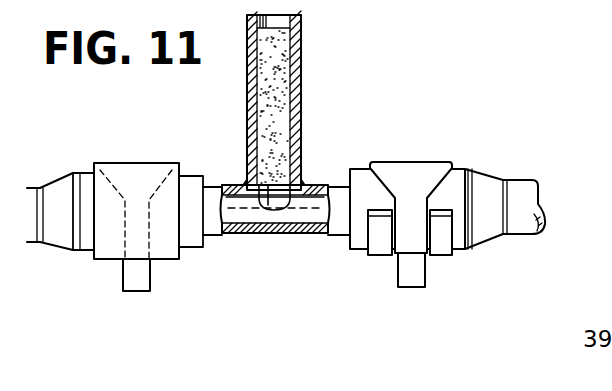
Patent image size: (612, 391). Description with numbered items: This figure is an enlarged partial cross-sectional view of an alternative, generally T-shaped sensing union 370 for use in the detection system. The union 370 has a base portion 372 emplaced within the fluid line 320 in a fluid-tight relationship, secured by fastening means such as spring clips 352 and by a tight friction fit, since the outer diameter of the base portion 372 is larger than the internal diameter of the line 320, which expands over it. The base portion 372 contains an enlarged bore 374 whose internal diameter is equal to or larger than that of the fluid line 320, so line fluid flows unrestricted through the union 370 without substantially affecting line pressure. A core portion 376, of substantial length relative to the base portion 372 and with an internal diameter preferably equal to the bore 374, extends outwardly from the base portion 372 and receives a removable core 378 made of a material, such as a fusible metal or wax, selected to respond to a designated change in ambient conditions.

The fluid line 320 is at (60, 181).
The spring clips 352 is at (133, 163).
The union 370 is at (316, 143).
The base portion 372 is at (337, 236).
The enlarged bore 374 is at (279, 234).
The core portion 376 is at (300, 62).
The removable core 378 is at (277, 52).